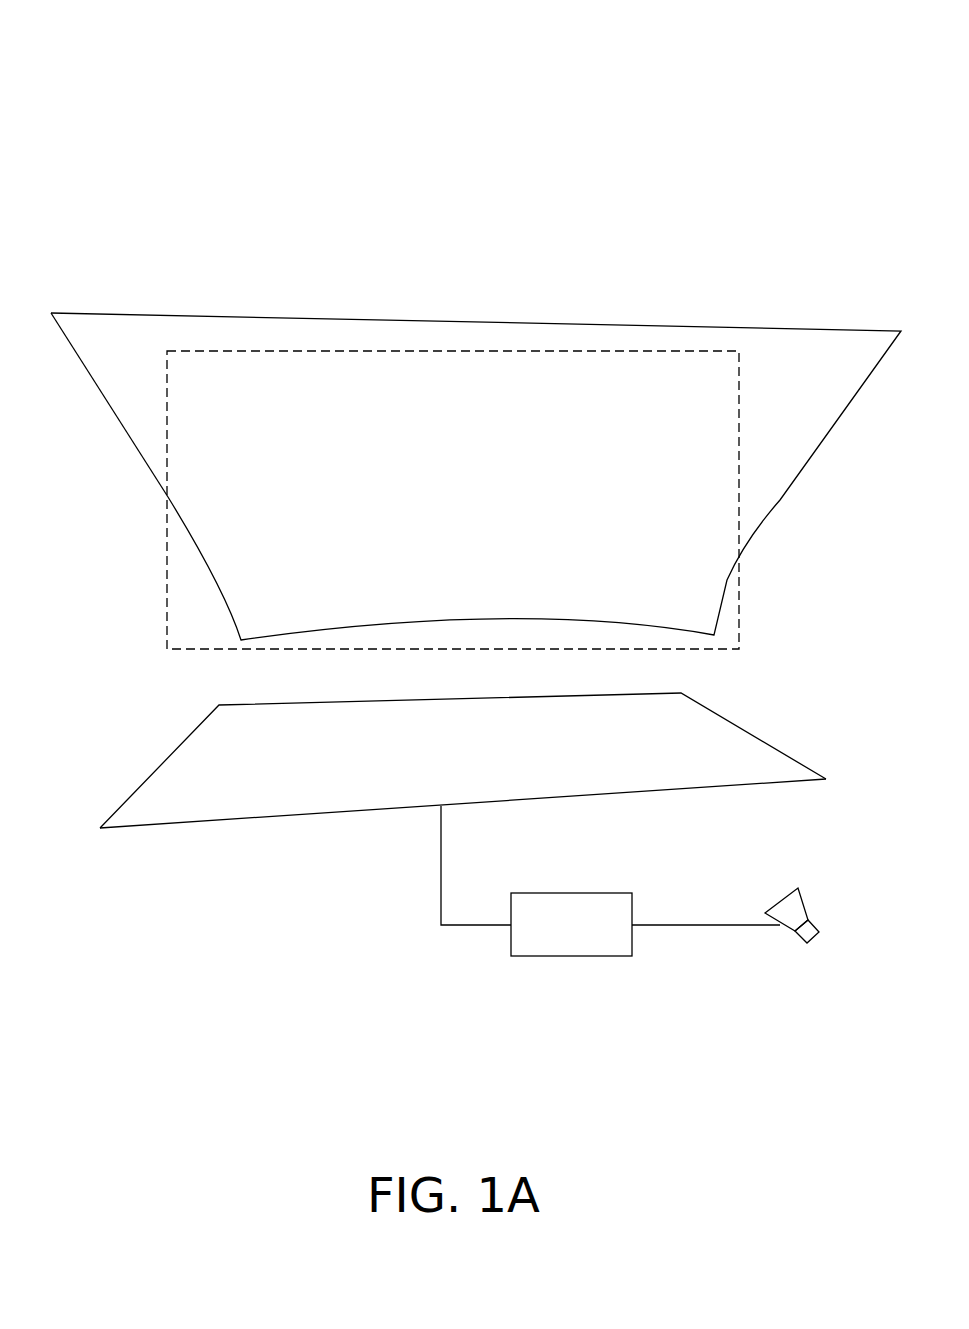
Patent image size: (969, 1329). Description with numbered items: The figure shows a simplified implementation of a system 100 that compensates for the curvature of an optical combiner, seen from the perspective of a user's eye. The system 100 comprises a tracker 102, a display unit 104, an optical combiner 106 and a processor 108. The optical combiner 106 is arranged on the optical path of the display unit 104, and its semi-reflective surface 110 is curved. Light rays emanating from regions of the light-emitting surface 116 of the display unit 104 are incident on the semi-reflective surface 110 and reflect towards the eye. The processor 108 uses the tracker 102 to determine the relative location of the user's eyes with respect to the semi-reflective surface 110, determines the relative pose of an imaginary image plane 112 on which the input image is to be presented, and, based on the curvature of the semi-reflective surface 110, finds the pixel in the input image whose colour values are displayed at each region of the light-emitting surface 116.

The system 100 is at (461, 527).
The tracker 102 is at (793, 968).
The display unit 104 is at (444, 803).
The optical combiner 106 is at (476, 429).
The processor 108 is at (610, 881).
The semi-reflective surface 110 is at (94, 405).
The imaginary image plane 112 is at (403, 500).
The light-emitting surface 116 is at (463, 836).